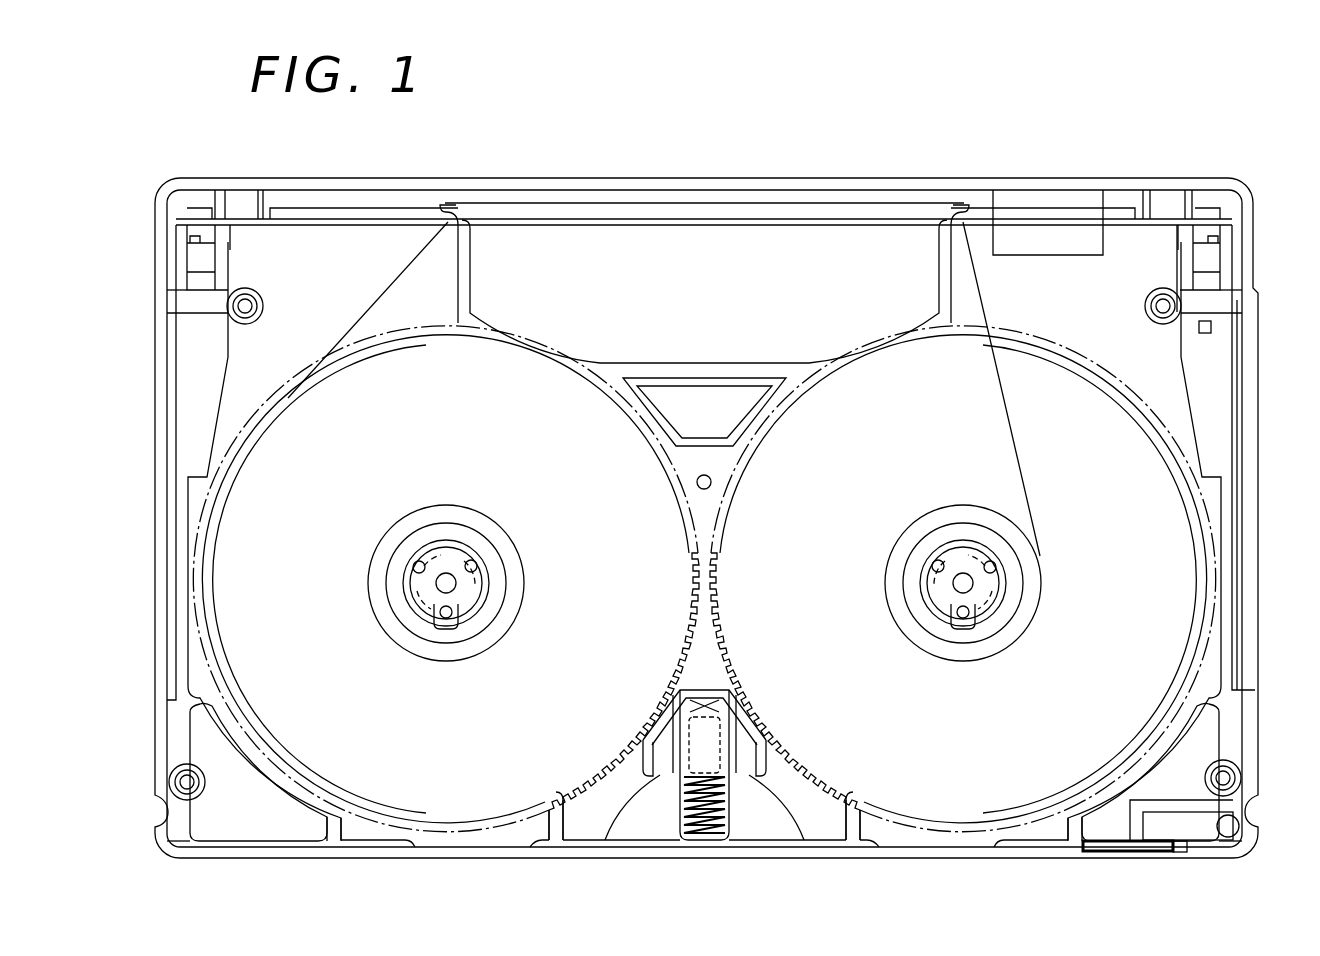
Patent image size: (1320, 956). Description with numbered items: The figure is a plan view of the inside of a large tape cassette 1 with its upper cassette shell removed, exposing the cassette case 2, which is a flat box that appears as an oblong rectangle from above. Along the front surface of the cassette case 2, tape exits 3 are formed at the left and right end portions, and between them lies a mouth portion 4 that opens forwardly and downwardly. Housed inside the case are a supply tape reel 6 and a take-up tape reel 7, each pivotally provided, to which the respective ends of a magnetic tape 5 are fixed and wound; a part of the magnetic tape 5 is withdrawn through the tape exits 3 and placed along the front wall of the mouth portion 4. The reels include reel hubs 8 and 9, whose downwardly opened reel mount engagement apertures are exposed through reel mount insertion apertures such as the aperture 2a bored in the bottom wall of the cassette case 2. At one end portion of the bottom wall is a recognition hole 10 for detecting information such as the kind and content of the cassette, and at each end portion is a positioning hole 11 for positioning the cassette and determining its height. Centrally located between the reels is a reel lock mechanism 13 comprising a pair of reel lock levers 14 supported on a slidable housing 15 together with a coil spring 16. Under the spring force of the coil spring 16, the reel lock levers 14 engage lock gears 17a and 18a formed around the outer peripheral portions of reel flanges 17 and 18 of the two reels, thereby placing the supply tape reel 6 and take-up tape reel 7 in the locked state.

The large tape cassette 1 is at (1128, 172).
The cassette case 2 is at (1258, 442).
The reel mount insertion aperture 2a is at (742, 800).
The tape exit 3 is at (313, 240).
The mouth portion 4 is at (725, 265).
The magnetic tape 5 is at (404, 255).
The supply tape reel 6 is at (218, 560).
The take-up tape reel 7 is at (1200, 560).
The reel hub 8 is at (455, 662).
The reel hub 9 is at (992, 662).
The recognition hole 10 is at (1230, 826).
The positioning hole 11 is at (185, 782).
The reel lock mechanism 13 is at (762, 716).
The reel lock lever 14 is at (672, 762).
The slidable housing 15 is at (693, 757).
The coil spring 16 is at (710, 830).
The reel flange 17 is at (415, 838).
The lock gear 17a is at (548, 835).
The reel flange 18 is at (962, 838).
The lock gear 18a is at (833, 828).